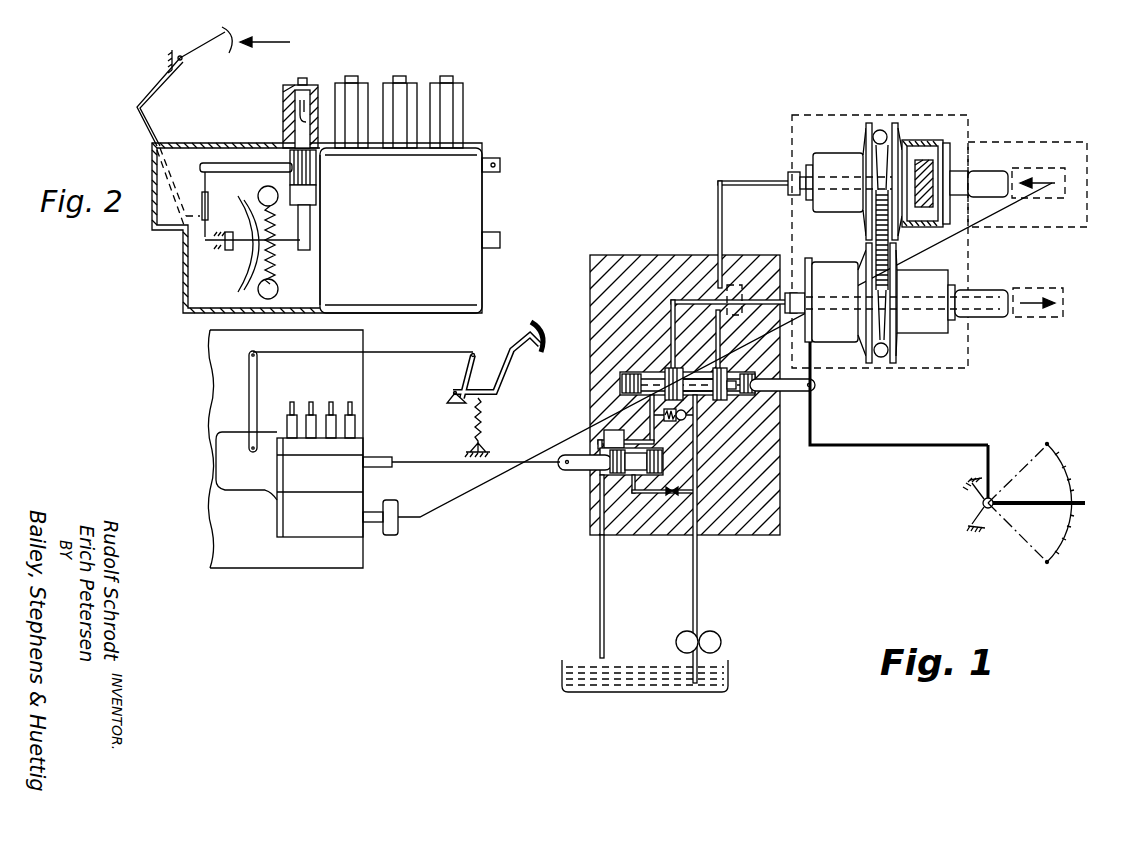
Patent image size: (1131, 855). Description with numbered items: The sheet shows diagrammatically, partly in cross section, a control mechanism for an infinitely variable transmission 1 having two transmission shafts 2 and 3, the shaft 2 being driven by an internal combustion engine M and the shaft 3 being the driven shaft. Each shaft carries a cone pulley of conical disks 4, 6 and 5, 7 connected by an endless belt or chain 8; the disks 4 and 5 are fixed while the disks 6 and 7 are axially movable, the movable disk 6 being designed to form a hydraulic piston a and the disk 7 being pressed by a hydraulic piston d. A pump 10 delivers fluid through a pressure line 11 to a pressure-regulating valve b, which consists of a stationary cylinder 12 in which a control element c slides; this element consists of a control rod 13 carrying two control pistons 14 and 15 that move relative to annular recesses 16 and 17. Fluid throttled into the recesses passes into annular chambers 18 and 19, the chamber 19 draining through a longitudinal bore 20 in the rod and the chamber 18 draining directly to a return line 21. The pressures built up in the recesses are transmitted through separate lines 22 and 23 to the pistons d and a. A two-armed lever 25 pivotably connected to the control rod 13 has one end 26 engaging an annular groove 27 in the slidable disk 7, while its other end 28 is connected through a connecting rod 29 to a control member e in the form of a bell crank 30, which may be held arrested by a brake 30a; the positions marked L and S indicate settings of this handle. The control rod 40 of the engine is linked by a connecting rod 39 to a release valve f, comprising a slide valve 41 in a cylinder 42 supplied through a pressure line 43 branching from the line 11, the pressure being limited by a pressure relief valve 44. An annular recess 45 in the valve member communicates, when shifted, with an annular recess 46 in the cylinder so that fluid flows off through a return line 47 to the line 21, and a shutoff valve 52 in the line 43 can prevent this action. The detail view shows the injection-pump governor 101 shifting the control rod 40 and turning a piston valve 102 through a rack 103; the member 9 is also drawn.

In FIG. 1, the infinitely variable transmission 1 is at (955, 128).
In FIG. 1, the transmission shaft 2 is at (990, 168).
In FIG. 1, the transmission shaft 3 is at (979, 292).
In FIG. 1, the conical disk 4 is at (868, 135).
In FIG. 1, the conical disk 5 is at (892, 362).
In FIG. 1, the conical disk 6 is at (896, 123).
In FIG. 1, the conical disk 7 is at (868, 356).
In FIG. 1, the endless belt or chain 8 is at (880, 130).
In FIG. 1, the accelerator pedal 9 is at (363, 460).
In FIG. 1, the pump 10 is at (706, 636).
In FIG. 1, the pressure line 11 is at (698, 591).
In FIG. 1, the stationary cylinder 12 is at (768, 400).
In FIG. 1, the control rod 13 is at (812, 386).
In FIG. 1, the control piston 14 is at (645, 372).
In FIG. 1, the control piston 15 is at (715, 375).
In FIG. 1, the annular recess 16 is at (672, 368).
In FIG. 1, the annular recess 17 is at (722, 360).
In FIG. 1, the annular chamber 18 is at (622, 374).
In FIG. 1, the annular chamber 19 is at (735, 372).
In FIG. 1, the longitudinal bore 20 is at (702, 397).
In FIG. 1, the return line 21 is at (600, 604).
In FIG. 1, the line 22 is at (696, 300).
In FIG. 1, the line 23 is at (723, 230).
In FIG. 1, the two-armed lever 25 is at (811, 407).
In FIG. 1, the lever end 26 is at (849, 330).
In FIG. 1, the annular groove 27 is at (810, 258).
In FIG. 1, the lever end 28 is at (813, 445).
In FIG. 1, the connecting rod 29 is at (900, 445).
In FIG. 1, the bell crank 30 is at (986, 458).
In FIG. 1, the brake 30a is at (978, 500).
In FIG. 1, the connecting rod 39 is at (495, 462).
In FIG. 1, the control rod 40 is at (386, 457).
In FIG. 1, the slide valve 41 is at (600, 470).
In FIG. 1, the cylinder 42 is at (625, 486).
In FIG. 1, the pressure line 43 is at (634, 492).
In FIG. 1, the pressure relief valve 44 is at (683, 421).
In FIG. 1, the annular recess 45 is at (604, 440).
In FIG. 1, the annular recess 46 is at (653, 478).
In FIG. 1, the return line 47 is at (618, 428).
In FIG. 1, the shutoff valve 52 is at (674, 497).
In FIG. 1, the hydraulic piston a is at (934, 133).
In FIG. 1, the pressure-regulating valve b is at (727, 399).
In FIG. 1, the control element c is at (801, 393).
In FIG. 1, the hydraulic piston d is at (848, 342).
In FIG. 1, the control member e is at (1035, 500).
In FIG. 1, the release valve f is at (628, 498).
In FIG. 1, the idle position L is at (1054, 441).
In FIG. 1, the full load position S is at (1052, 571).
In FIG. 1, the internal combustion engine M is at (630, 375).
In FIG. 2, the injection-pump governor 101 is at (222, 250).
In FIG. 2, the piston valve 102 is at (298, 122).
In FIG. 2, the rack 103 is at (291, 176).